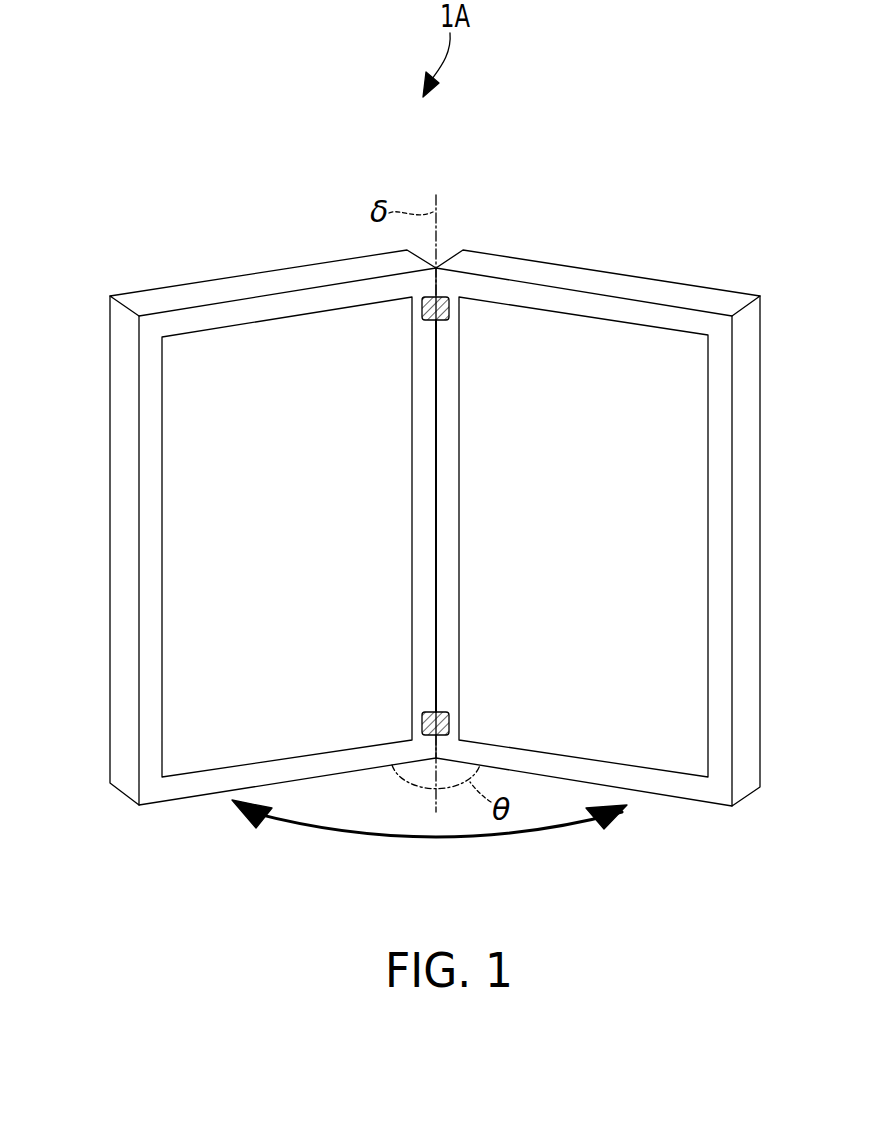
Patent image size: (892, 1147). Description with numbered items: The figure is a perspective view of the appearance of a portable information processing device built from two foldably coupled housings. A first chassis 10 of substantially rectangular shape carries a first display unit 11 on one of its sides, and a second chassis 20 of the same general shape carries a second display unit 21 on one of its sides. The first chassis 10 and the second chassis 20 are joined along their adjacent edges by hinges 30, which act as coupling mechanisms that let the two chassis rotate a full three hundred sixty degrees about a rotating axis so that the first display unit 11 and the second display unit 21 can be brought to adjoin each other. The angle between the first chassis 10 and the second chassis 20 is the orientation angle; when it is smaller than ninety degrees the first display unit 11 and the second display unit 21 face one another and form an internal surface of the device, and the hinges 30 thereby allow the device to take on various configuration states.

The first chassis 10 is at (282, 305).
The first display unit 11 is at (183, 345).
The second chassis 20 is at (598, 305).
The second display unit 21 is at (672, 352).
The hinges 30 is at (438, 306).